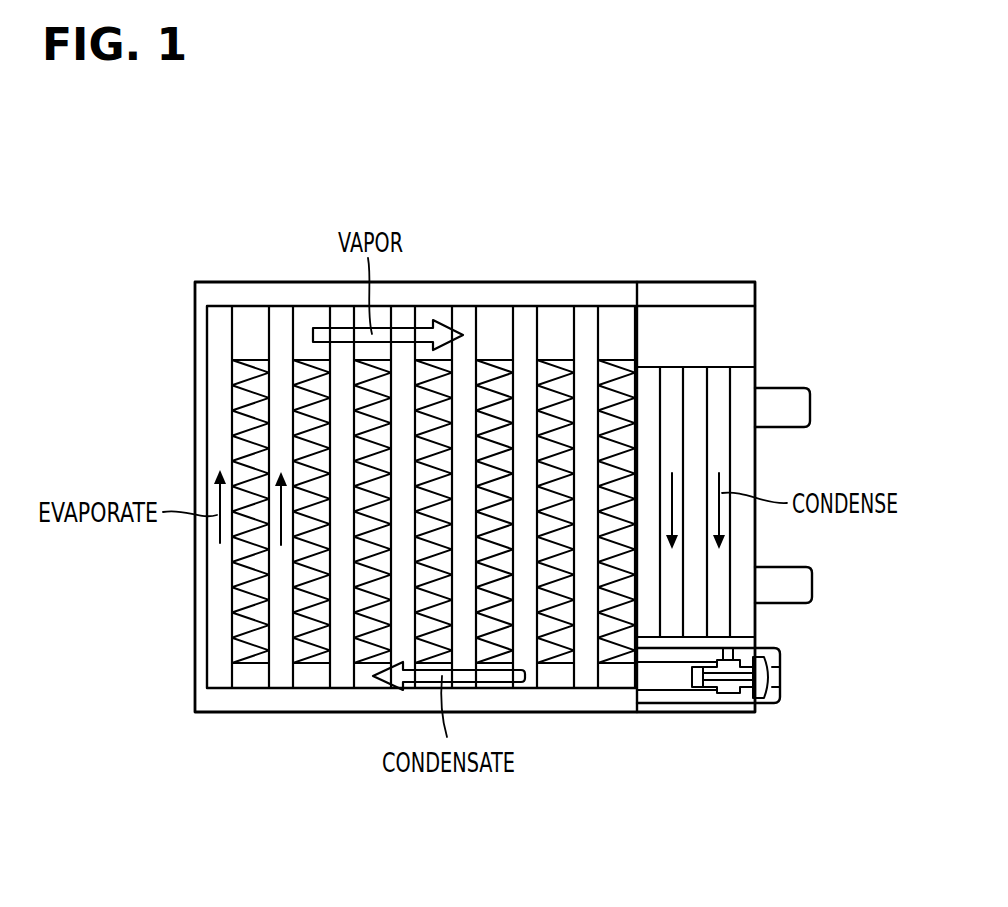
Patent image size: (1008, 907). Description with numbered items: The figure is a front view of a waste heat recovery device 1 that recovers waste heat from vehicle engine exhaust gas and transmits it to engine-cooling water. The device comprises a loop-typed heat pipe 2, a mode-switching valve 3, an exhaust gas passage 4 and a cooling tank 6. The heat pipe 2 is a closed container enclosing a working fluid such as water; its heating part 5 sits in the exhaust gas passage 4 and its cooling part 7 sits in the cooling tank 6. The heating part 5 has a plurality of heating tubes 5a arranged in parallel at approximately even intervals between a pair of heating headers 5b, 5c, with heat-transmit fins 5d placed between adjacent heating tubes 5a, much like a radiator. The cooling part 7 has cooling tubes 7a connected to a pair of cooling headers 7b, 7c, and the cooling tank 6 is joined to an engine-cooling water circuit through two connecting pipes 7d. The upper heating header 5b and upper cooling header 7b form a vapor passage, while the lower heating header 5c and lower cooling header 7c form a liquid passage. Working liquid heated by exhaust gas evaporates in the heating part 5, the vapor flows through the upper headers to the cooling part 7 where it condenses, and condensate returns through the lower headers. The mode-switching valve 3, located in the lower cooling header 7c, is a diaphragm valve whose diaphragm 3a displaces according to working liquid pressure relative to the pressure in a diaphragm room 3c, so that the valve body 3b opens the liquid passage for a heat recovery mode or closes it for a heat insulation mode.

The waste heat recovery device 1 is at (285, 228).
The loop-typed heat pipe 2 is at (660, 224).
The mode-switching valve 3 is at (727, 704).
The diaphragm 3a is at (768, 695).
The valve body 3b is at (695, 682).
The diaphragm room 3c is at (768, 663).
The exhaust gas passage 4 is at (483, 282).
The heating part 5 is at (566, 304).
The heating tubes 5a is at (217, 402).
The upper heating header 5b is at (244, 318).
The lower heating header 5c is at (253, 684).
The heat-transmit fins 5d is at (243, 610).
The cooling tank 6 is at (698, 284).
The cooling part 7 is at (656, 303).
The cooling tubes 7a is at (718, 445).
The upper cooling header 7b is at (718, 320).
The lower cooling header 7c is at (653, 708).
The connecting pipes 7d is at (788, 397).